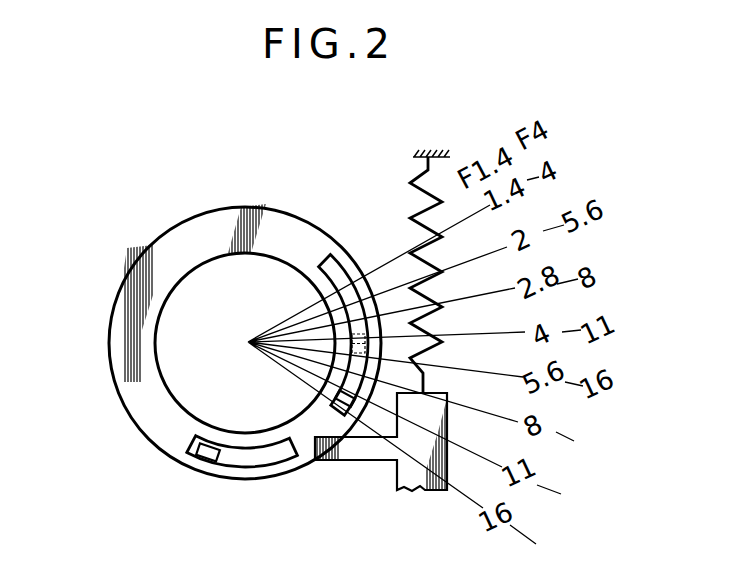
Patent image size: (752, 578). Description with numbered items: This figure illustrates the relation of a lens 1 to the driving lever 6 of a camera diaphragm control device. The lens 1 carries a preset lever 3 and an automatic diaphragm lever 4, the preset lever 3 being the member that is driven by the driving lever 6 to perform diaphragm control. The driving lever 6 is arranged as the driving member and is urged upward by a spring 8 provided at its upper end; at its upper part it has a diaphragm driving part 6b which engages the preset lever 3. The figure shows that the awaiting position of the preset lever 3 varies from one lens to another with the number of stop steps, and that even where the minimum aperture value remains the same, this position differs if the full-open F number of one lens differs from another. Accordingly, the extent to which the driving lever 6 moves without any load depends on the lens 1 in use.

The lens 1 is at (187, 228).
The preset lever 3 is at (338, 392).
The automatic diaphragm lever 4 is at (205, 459).
The driving lever 6 is at (447, 433).
The diaphragm driving part 6b is at (370, 460).
The spring 8 is at (413, 208).